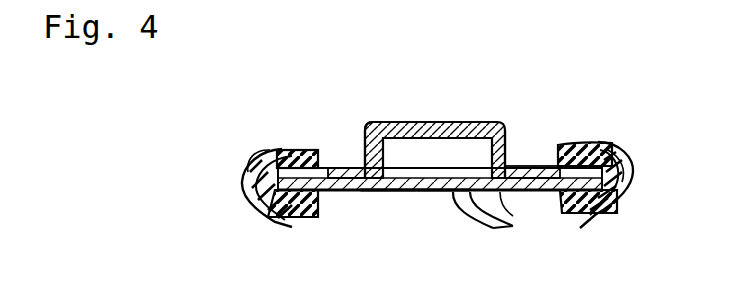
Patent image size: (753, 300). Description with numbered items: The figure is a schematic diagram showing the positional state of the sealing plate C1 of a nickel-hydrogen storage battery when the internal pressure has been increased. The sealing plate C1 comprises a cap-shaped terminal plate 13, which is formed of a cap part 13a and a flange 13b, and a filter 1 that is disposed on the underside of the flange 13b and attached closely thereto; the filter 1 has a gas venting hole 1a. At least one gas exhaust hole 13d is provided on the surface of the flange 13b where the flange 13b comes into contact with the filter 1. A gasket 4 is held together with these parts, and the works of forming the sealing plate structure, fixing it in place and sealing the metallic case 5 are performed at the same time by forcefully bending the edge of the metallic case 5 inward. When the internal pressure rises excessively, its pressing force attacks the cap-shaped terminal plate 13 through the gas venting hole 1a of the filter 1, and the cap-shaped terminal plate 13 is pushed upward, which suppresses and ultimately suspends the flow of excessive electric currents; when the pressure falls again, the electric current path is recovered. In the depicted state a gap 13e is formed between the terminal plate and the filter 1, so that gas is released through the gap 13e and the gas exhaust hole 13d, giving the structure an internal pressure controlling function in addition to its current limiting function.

The filter 1 is at (627, 188).
The gas venting hole 1a is at (423, 189).
The gasket 4 is at (280, 150).
The metallic case 5 is at (243, 190).
The cap-shaped terminal plate 13 is at (448, 126).
The cap part 13a is at (482, 127).
The flange 13b is at (353, 165).
The gas exhaust hole 13d is at (312, 154).
The gap 13e is at (376, 166).
The sealing plate C1 is at (420, 122).